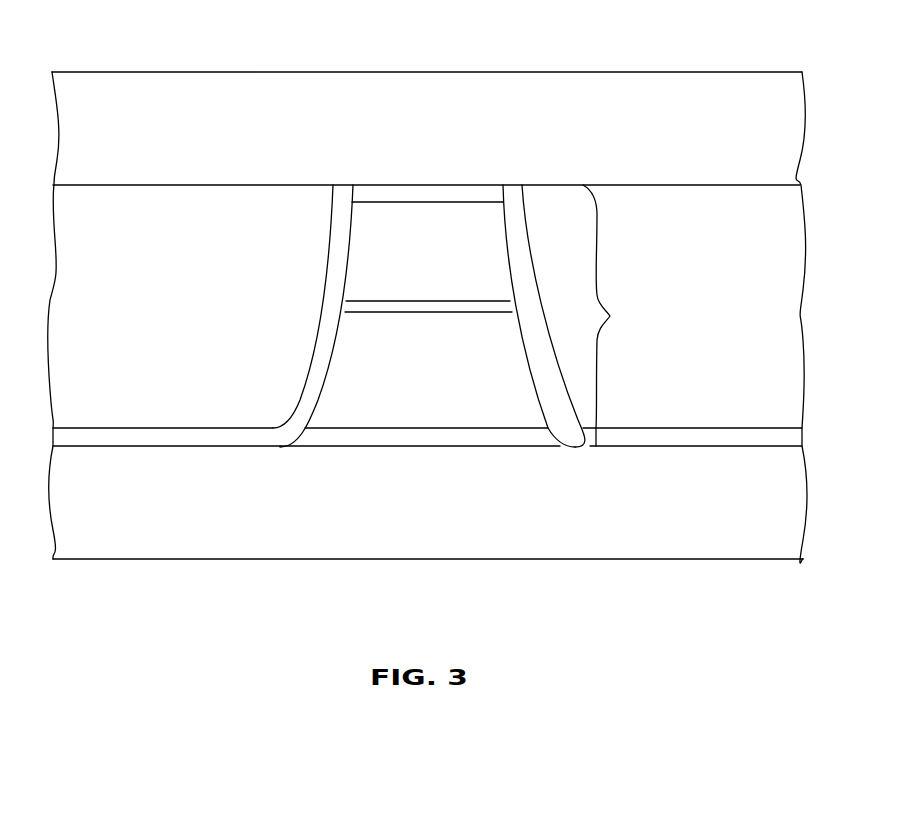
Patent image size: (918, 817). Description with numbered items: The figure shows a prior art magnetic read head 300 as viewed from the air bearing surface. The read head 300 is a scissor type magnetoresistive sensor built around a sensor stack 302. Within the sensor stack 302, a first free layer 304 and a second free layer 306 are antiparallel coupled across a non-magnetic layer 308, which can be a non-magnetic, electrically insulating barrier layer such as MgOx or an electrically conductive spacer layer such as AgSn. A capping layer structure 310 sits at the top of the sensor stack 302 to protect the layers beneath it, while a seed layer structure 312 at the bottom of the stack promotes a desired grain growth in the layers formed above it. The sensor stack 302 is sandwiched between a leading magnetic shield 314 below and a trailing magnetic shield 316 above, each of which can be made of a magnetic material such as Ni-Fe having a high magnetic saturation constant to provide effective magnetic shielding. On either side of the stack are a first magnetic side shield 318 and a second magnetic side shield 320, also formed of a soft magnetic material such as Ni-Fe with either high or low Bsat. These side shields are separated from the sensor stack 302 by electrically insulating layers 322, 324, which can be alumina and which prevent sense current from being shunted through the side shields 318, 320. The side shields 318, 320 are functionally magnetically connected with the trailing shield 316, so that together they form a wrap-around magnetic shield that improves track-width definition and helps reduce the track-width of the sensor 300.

The magnetic read head 300 is at (577, 62).
The sensor stack 302 is at (600, 218).
The first free layer 304 is at (465, 350).
The second free layer 306 is at (469, 246).
The non-magnetic layer 308 is at (433, 304).
The capping layer structure 310 is at (452, 193).
The seed layer structure 312 is at (437, 437).
The leading magnetic shield 314 is at (474, 501).
The trailing magnetic shield 316 is at (480, 123).
The first magnetic side shield 318 is at (685, 293).
The second magnetic side shield 320 is at (175, 281).
The insulation layer 322 is at (662, 436).
The insulation layer 324 is at (172, 437).